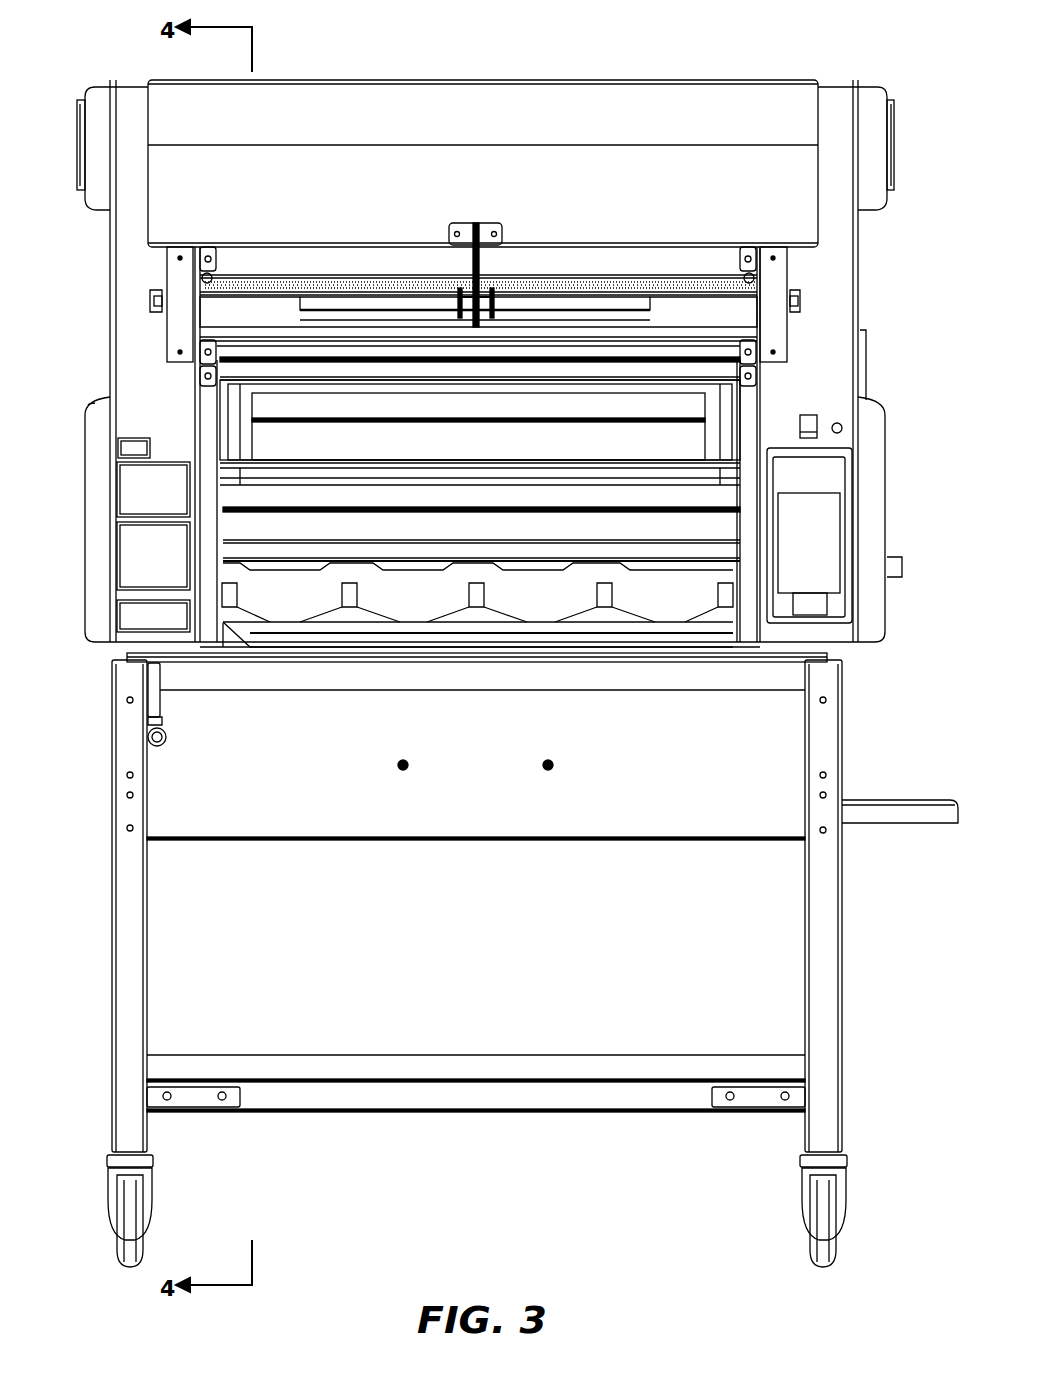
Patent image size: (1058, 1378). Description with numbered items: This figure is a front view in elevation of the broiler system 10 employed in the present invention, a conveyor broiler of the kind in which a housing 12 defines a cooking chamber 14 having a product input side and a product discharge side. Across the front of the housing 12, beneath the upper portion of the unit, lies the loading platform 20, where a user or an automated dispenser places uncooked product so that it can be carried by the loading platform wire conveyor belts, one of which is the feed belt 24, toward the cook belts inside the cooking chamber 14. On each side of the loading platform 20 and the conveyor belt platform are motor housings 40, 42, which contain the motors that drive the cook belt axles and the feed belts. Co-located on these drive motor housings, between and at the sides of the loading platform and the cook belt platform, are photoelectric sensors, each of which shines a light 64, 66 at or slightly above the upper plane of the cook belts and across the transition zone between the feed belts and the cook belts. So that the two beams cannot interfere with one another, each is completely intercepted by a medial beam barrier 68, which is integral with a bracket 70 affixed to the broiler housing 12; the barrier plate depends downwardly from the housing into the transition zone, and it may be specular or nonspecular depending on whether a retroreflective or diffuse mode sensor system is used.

The broiler system 10 is at (722, 56).
The housing 12 is at (845, 295).
The cooking chamber 14 is at (557, 262).
The loading platform 20 is at (260, 313).
The feed belt 24 is at (685, 293).
The motor housing 40 is at (167, 325).
The motor housing 42 is at (787, 325).
The light 64 is at (348, 283).
The light 66 is at (620, 290).
The medial beam barrier 68 is at (480, 286).
The bracket 70 is at (483, 226).